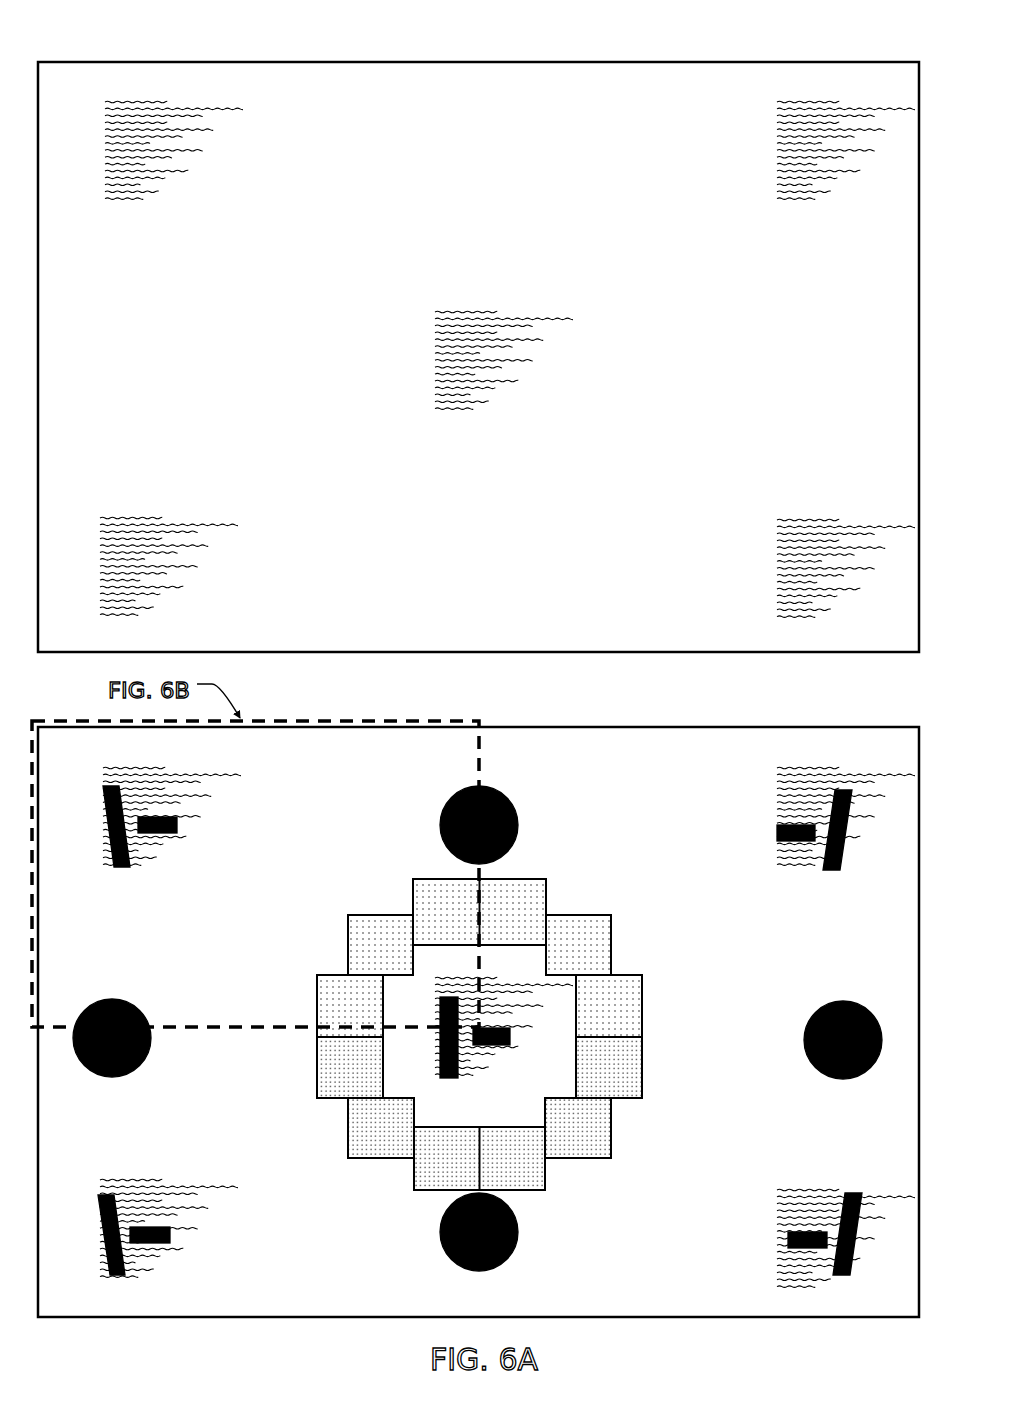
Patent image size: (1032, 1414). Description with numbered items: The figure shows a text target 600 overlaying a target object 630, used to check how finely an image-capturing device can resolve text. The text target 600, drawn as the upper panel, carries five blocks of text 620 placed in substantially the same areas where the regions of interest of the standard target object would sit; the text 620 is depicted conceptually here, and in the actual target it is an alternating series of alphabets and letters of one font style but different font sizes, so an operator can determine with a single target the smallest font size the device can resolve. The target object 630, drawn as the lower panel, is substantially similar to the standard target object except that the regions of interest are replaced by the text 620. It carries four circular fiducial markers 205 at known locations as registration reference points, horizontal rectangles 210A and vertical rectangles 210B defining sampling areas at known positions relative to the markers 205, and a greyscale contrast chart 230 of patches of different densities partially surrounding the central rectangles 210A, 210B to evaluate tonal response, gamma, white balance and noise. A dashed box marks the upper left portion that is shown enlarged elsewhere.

The text target 600 is at (293, 59).
The target object 630 is at (664, 723).
The text 620 is at (125, 205).
The markers 205 is at (440, 823).
The contrast chart 230 is at (317, 1003).
The horizontal rectangles 210A is at (178, 828).
The vertical rectangles 210B is at (122, 868).